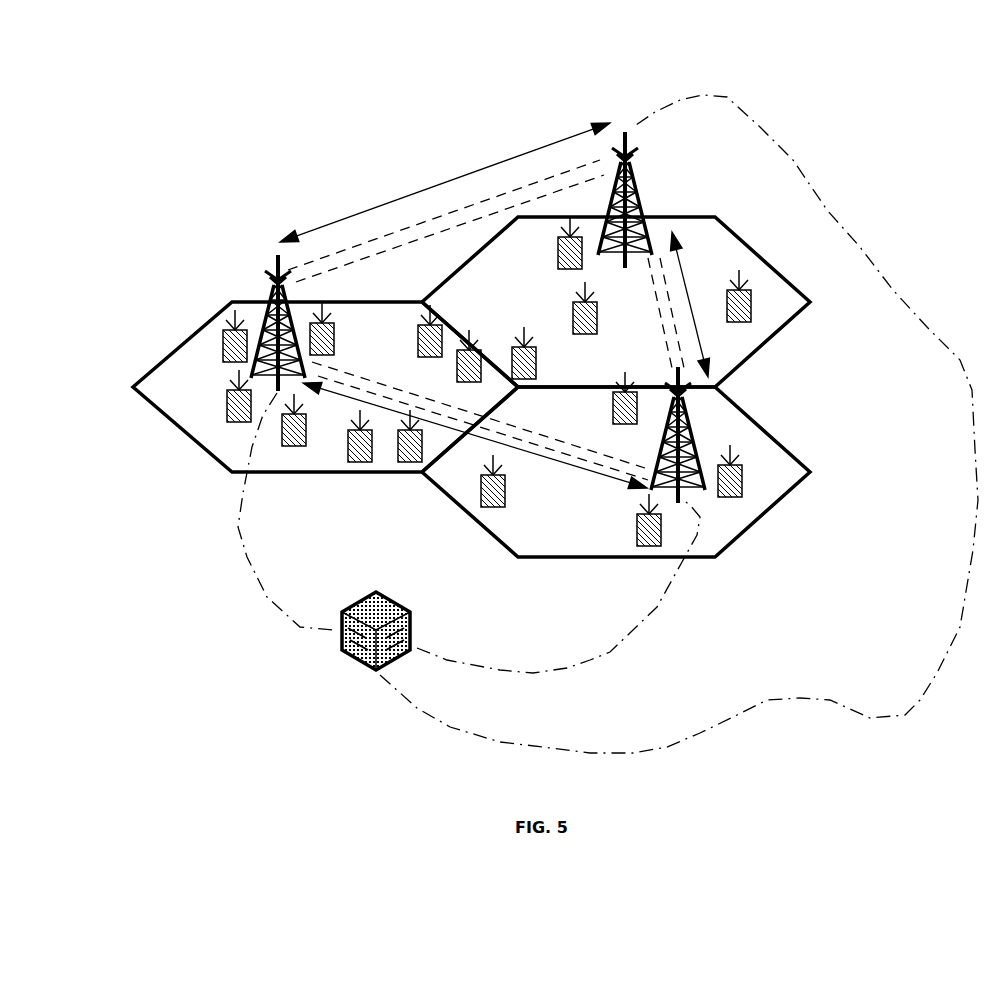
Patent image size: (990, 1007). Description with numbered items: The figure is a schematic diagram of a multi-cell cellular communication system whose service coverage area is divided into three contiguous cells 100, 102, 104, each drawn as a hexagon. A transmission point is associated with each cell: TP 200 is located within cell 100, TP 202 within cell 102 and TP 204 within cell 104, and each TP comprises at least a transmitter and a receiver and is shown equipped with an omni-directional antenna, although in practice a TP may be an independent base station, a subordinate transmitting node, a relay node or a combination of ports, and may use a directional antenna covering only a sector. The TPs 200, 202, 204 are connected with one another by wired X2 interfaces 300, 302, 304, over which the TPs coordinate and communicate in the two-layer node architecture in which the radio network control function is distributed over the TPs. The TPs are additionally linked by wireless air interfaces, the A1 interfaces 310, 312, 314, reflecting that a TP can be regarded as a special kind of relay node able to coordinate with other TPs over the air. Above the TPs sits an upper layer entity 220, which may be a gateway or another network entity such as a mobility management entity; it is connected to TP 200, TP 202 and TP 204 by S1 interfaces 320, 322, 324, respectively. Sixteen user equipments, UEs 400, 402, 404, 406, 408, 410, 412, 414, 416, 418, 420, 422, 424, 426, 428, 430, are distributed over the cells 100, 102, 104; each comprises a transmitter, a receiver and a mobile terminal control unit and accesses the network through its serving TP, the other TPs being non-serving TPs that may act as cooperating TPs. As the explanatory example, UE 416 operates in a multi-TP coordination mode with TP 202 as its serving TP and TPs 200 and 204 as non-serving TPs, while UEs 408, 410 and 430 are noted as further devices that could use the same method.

The cell 100 is at (183, 344).
The cell 102 is at (775, 267).
The cell 104 is at (733, 543).
The TP 200 is at (270, 270).
The TP 202 is at (630, 130).
The TP 204 is at (688, 408).
The upper layer entity 220 is at (343, 653).
The X2 interface 300 is at (477, 203).
The X2 interface 302 is at (545, 442).
The X2 interface 304 is at (668, 295).
The A1 interface 310 is at (483, 169).
The A1 interface 312 is at (585, 470).
The A1 interface 314 is at (682, 252).
The S1 interface 320 is at (257, 585).
The S1 interface 322 is at (970, 567).
The S1 interface 324 is at (593, 658).
The UE 400 is at (333, 334).
The UE 402 is at (293, 448).
The UE 404 is at (218, 324).
The UE 406 is at (243, 423).
The UE 408 is at (420, 326).
The UE 410 is at (458, 370).
The UE 412 is at (413, 463).
The UE 414 is at (360, 463).
The UE 416 is at (523, 330).
The UE 418 is at (583, 270).
The UE 420 is at (598, 320).
The UE 422 is at (750, 305).
The UE 424 is at (743, 478).
The UE 426 is at (645, 548).
The UE 428 is at (488, 510).
The UE 430 is at (613, 410).